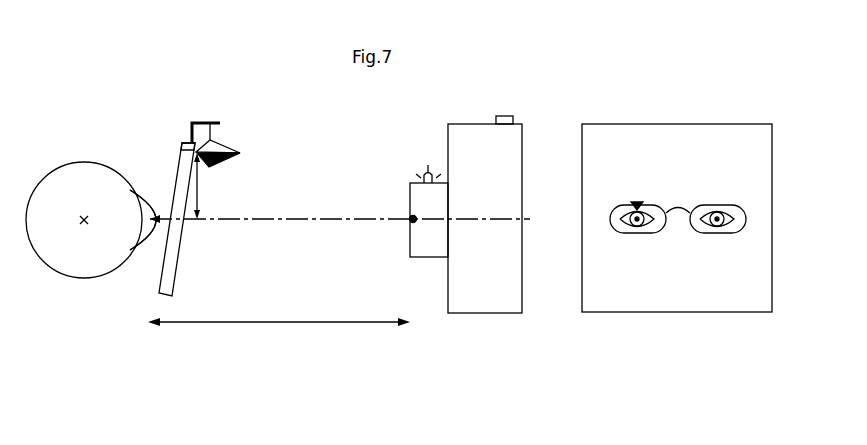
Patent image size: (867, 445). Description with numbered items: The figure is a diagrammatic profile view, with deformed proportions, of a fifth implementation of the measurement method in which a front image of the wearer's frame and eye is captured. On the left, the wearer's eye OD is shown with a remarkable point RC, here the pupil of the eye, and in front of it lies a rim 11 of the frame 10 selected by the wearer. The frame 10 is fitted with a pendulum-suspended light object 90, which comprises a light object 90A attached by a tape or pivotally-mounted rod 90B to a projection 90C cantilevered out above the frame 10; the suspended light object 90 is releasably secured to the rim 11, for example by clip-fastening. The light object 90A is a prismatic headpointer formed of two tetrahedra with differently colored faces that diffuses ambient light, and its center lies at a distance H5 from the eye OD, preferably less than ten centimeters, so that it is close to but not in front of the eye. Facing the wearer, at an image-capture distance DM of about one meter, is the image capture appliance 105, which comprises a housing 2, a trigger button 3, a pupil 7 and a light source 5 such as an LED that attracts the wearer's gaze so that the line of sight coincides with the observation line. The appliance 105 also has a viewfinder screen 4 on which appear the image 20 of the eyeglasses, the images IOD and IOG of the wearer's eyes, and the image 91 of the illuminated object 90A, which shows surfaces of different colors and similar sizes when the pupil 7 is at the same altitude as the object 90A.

The eye of the wearer OD is at (83, 276).
The remarkable point RC is at (152, 215).
The frame 10 is at (149, 300).
The rim 11 is at (180, 145).
The pendulum-suspended light object 90 is at (246, 144).
The light object 90A is at (242, 153).
The pivotally-mounted rod 90B is at (215, 140).
The projection 90C is at (204, 122).
The distance between center of illuminated object and wearer's eye H5 is at (211, 186).
The image-capture distance DM is at (279, 334).
The image capture appliance 105 is at (461, 251).
The housing 2 is at (465, 316).
The trigger button 3 is at (510, 117).
The light source 5 is at (429, 168).
The pupil of the image capture appliance 7 is at (408, 219).
The viewfinder screen 4 is at (677, 243).
The image of the eyeglasses 20 is at (630, 234).
The image of the illuminated object 91 is at (637, 202).
The image of the wearer's left eye IOG is at (717, 210).
The image of the wearer's right eye IOD is at (652, 236).